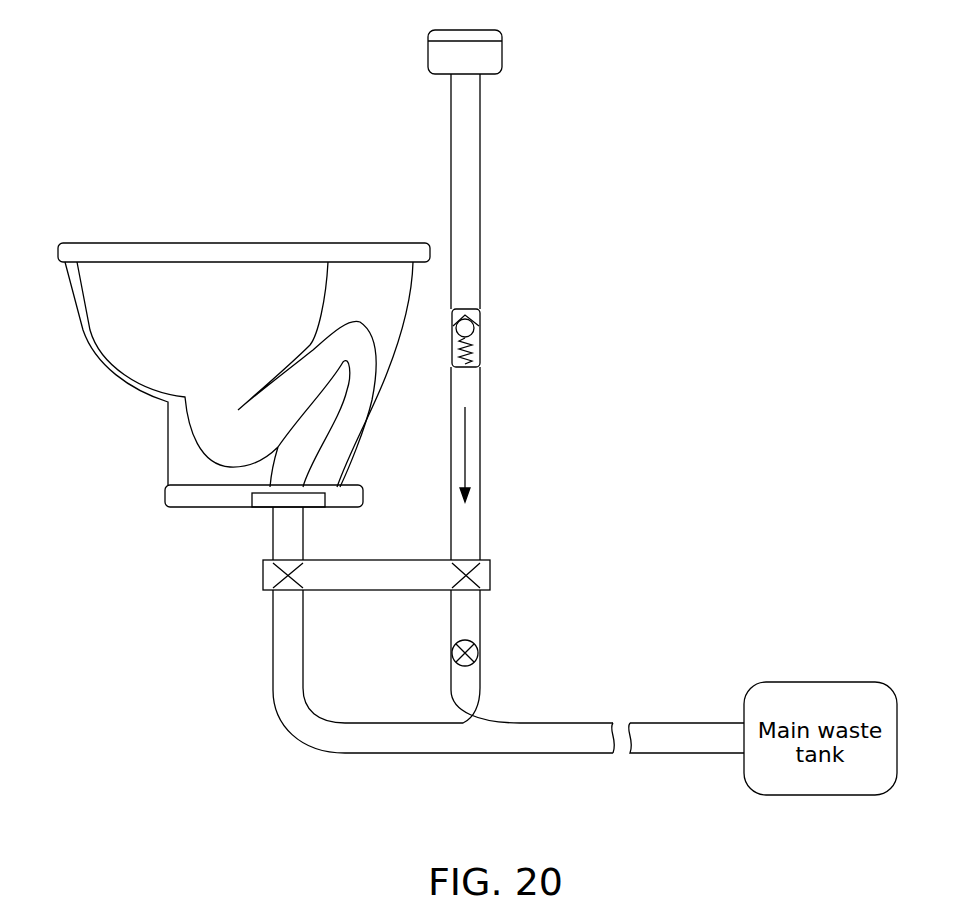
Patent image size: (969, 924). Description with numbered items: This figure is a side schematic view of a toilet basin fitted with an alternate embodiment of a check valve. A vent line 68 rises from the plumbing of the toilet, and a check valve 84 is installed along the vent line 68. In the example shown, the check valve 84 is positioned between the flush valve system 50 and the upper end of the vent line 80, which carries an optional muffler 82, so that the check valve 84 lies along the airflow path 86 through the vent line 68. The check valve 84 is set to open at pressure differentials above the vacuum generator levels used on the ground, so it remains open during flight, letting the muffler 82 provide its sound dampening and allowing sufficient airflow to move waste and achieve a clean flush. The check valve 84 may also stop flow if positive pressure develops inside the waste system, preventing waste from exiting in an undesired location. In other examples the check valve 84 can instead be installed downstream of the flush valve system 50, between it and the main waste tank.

The muffler 82 is at (490, 52).
The upper end of the vent line 80 is at (487, 83).
The vent line 68 is at (463, 222).
The check valve 84 is at (467, 330).
The airflow path 86 is at (465, 447).
The flush valve system 50 is at (318, 549).